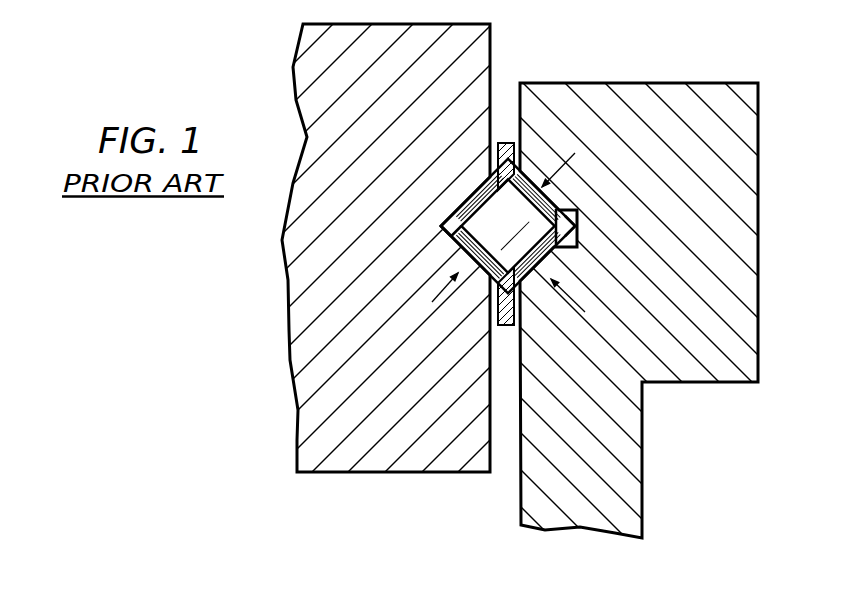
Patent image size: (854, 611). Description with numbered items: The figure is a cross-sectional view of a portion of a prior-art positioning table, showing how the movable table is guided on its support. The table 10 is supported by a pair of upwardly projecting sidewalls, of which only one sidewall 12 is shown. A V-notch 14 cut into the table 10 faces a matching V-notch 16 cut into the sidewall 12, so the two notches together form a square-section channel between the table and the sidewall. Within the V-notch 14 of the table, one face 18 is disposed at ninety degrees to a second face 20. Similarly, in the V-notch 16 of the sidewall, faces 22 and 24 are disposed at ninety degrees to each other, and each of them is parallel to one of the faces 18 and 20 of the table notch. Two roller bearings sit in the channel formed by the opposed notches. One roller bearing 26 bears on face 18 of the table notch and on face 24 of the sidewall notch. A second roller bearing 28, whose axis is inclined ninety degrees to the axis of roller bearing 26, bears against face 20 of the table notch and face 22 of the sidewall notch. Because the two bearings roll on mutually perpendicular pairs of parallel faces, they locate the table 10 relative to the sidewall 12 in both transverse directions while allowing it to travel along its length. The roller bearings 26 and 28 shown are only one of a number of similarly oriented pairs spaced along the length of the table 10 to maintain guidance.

The table 10 is at (416, 474).
The sidewall 12 is at (643, 487).
The V-notch 14 is at (462, 235).
The V-notch 16 is at (568, 245).
The face 18 is at (450, 220).
The second face 20 is at (446, 238).
The face 22 is at (575, 230).
The face 24 is at (590, 248).
The roller bearing 26 is at (465, 189).
The second roller bearing 28 is at (526, 181).